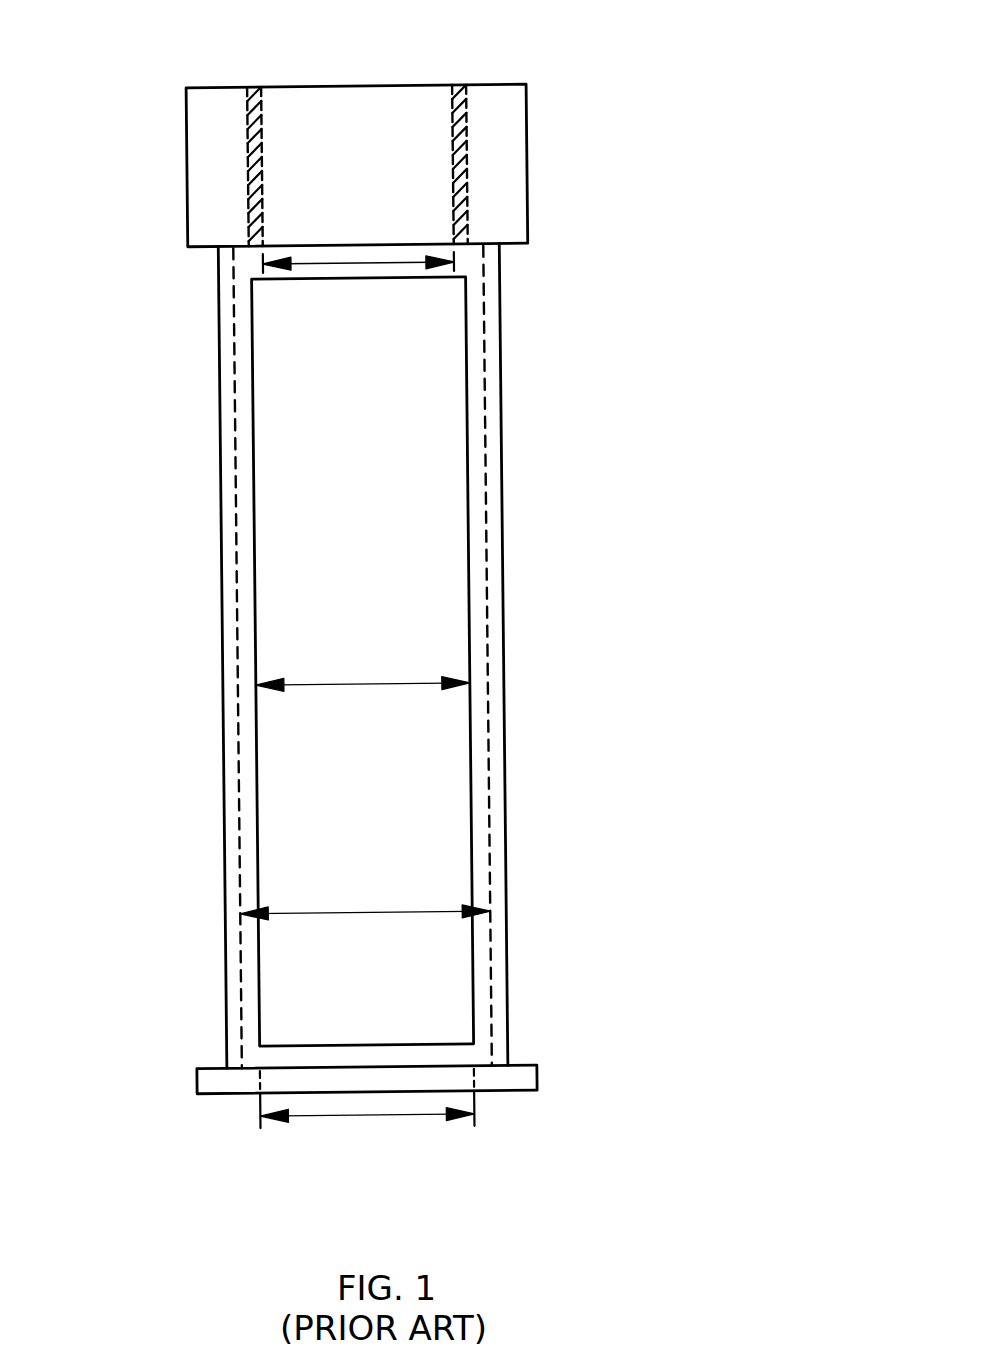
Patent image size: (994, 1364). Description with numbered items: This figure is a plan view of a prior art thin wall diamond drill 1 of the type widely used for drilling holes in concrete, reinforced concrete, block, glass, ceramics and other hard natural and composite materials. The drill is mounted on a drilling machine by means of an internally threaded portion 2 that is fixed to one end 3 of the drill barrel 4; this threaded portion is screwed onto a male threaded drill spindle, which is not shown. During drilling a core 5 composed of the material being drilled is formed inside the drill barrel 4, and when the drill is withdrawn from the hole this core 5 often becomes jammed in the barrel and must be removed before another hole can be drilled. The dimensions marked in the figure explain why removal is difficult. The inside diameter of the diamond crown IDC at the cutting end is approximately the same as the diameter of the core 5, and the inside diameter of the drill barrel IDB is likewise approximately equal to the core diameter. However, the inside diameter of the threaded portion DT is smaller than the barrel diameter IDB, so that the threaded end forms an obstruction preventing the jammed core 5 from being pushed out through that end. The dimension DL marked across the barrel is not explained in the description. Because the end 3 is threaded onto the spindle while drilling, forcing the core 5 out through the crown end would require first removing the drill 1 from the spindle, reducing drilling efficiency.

The thin wall diamond drill 1 is at (725, 349).
The internally threaded portion 2 is at (458, 155).
The end of the drill barrel 3 is at (194, 271).
The drill barrel 4 is at (505, 504).
The core 5 is at (441, 399).
The inside diameter of the threaded portion DT is at (361, 262).
The liner diameter DL is at (415, 685).
The inside diameter of the drill barrel IDB is at (410, 912).
The inside diameter of the diamond crown IDC is at (325, 1115).